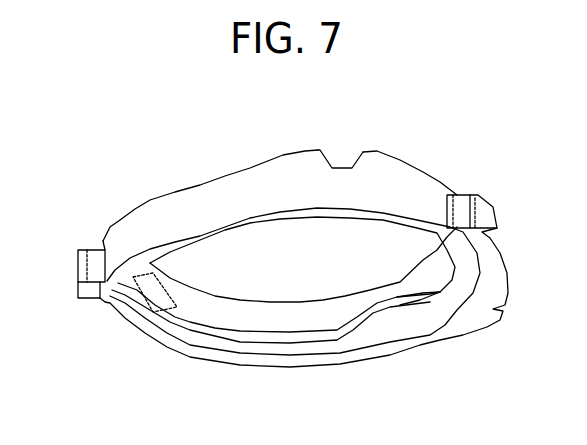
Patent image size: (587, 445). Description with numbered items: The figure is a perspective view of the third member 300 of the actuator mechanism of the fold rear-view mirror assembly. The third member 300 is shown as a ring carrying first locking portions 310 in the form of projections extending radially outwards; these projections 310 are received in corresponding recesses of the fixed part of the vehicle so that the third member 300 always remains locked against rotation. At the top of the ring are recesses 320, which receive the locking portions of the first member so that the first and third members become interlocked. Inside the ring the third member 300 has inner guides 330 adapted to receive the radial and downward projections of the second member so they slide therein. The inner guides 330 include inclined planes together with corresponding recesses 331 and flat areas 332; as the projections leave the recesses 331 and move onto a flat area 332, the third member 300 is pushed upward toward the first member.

The third member 300 is at (165, 168).
The first locking portions 310 is at (291, 212).
The recesses 320 is at (383, 124).
The inner guides 330 is at (276, 359).
The recesses 331 is at (413, 313).
The flat area 332 is at (180, 345).